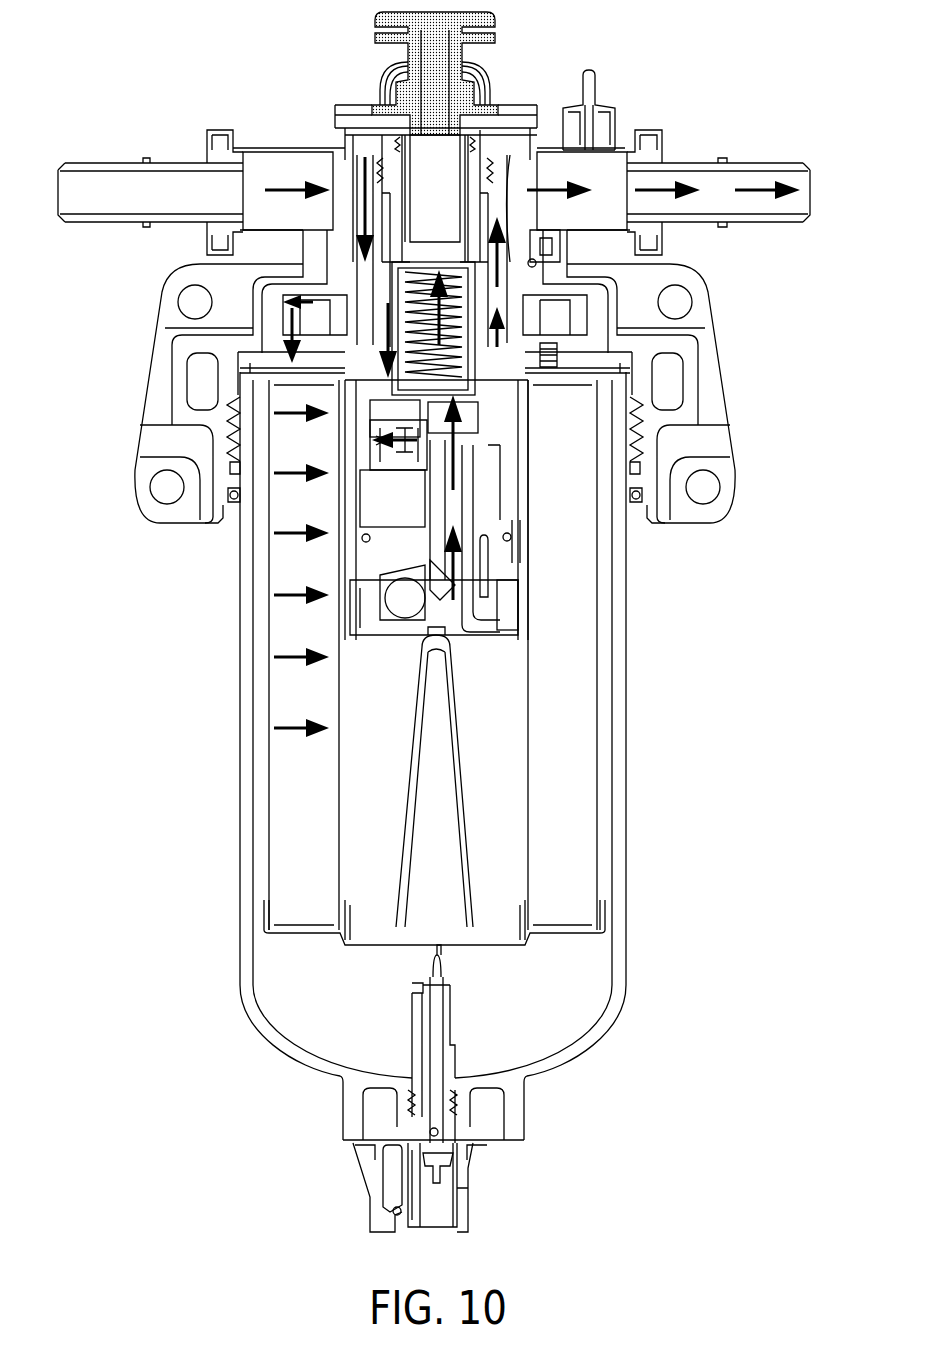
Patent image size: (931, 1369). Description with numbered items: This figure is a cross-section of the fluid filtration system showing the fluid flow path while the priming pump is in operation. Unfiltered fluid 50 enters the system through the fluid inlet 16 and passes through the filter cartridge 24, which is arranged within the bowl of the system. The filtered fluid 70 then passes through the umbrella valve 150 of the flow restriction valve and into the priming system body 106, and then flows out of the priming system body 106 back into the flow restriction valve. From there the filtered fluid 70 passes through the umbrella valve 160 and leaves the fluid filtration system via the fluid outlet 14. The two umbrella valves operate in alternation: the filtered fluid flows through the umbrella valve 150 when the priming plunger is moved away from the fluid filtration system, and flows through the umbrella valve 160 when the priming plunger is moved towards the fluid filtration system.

The fluid inlet 16 is at (128, 165).
The fluid outlet 14 is at (740, 167).
The priming system body 106 is at (358, 322).
The umbrella valve 160 is at (400, 440).
The filtered fluid 70 is at (507, 346).
The unfiltered fluid 50 is at (290, 565).
The filter cartridge 24 is at (272, 815).
The umbrella valve 150 is at (497, 437).